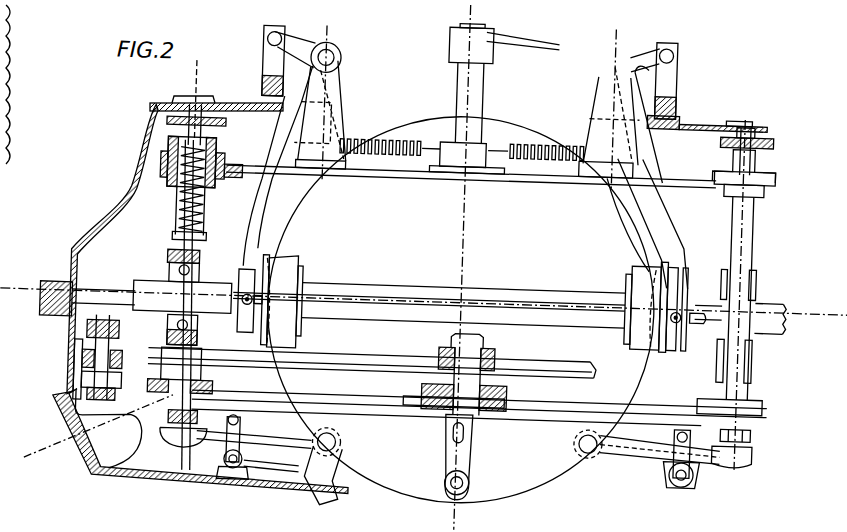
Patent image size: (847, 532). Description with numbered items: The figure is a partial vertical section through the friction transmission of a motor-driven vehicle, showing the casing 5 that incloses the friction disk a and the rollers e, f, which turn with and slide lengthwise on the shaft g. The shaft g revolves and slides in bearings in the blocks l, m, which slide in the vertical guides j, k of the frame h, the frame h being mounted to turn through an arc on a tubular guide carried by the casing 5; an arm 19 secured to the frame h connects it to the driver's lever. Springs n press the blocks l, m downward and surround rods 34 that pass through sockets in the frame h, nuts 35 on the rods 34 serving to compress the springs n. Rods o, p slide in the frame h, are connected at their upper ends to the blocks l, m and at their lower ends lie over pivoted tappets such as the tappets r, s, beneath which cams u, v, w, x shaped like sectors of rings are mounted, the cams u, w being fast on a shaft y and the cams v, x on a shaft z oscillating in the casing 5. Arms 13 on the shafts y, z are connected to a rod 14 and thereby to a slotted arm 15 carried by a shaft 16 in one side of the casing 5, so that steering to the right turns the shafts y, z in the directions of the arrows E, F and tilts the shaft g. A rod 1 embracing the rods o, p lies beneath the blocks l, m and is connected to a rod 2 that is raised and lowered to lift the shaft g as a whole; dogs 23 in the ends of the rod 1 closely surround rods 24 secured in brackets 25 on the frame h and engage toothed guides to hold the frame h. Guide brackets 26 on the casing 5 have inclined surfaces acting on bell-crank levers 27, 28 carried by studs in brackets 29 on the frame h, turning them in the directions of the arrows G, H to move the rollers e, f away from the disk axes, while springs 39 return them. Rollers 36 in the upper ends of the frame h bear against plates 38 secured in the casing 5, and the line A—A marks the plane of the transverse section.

The rod 1 is at (562, 368).
The rod 2 is at (456, 374).
The casing 5 is at (125, 190).
The arms 13 is at (228, 420).
The rod 14 is at (512, 432).
The arm 15 is at (445, 455).
The shaft 16 is at (450, 488).
The arm 19 is at (520, 46).
The dogs 23 is at (88, 380).
The rods 24 is at (95, 350).
The brackets 25 is at (88, 328).
The guide brackets 26 is at (262, 62).
The bell-crank lever 27 is at (341, 52).
The bell-crank lever 28 is at (660, 98).
The brackets 29 is at (346, 88).
The rods 34 is at (213, 146).
The nuts 35 is at (206, 238).
The rollers 36 is at (750, 160).
The plates 38 is at (165, 117).
The springs 39 is at (395, 158).
The friction disk a is at (430, 126).
The roller e is at (275, 206).
The roller f is at (666, 307).
The shaft g is at (786, 333).
The frame h is at (668, 167).
The vertical guide j is at (170, 246).
The vertical guide k is at (754, 246).
The block l is at (168, 268).
The block m is at (758, 285).
The springs n is at (178, 205).
The rod o is at (168, 416).
The rod p is at (752, 432).
The tappet r is at (740, 465).
The tappet s is at (166, 441).
The cam u is at (312, 446).
The cam v is at (662, 472).
The cam w is at (215, 461).
The cam x is at (695, 482).
The shaft y is at (231, 470).
The shaft z is at (682, 487).
The section line A— A is at (458, 31).
The arrow E is at (300, 498).
The arrow F is at (606, 509).
The arrow G is at (244, 203).
The arrow H is at (697, 264).